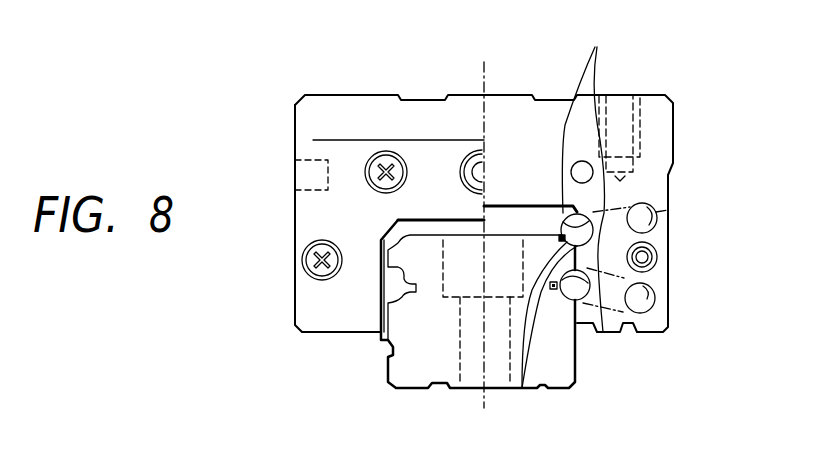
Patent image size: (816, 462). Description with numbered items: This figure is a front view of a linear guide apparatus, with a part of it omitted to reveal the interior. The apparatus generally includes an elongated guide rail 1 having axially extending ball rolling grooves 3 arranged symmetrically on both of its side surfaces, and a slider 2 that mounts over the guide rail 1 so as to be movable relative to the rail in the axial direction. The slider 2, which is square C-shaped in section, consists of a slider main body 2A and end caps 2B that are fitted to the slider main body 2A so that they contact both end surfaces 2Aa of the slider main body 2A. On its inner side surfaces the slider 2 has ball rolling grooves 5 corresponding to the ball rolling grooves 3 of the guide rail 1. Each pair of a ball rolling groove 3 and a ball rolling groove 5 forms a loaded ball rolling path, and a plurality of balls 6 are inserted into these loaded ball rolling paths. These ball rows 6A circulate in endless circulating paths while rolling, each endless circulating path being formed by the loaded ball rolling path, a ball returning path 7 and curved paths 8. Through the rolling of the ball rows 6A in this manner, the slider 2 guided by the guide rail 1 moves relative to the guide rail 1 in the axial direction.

The guide rail 1 is at (565, 355).
The slider 2 is at (352, 86).
The slider main body 2A is at (660, 157).
The end surfaces of the slider main body 2Aa is at (517, 150).
The end caps 2B is at (313, 140).
The ball rolling grooves of the guide rail 3 is at (522, 388).
The ball rolling grooves of the slider 5 is at (584, 175).
The balls 6 is at (584, 299).
The ball rows 6A is at (645, 298).
The ball returning path 7 is at (653, 217).
The curved paths 8 is at (585, 247).